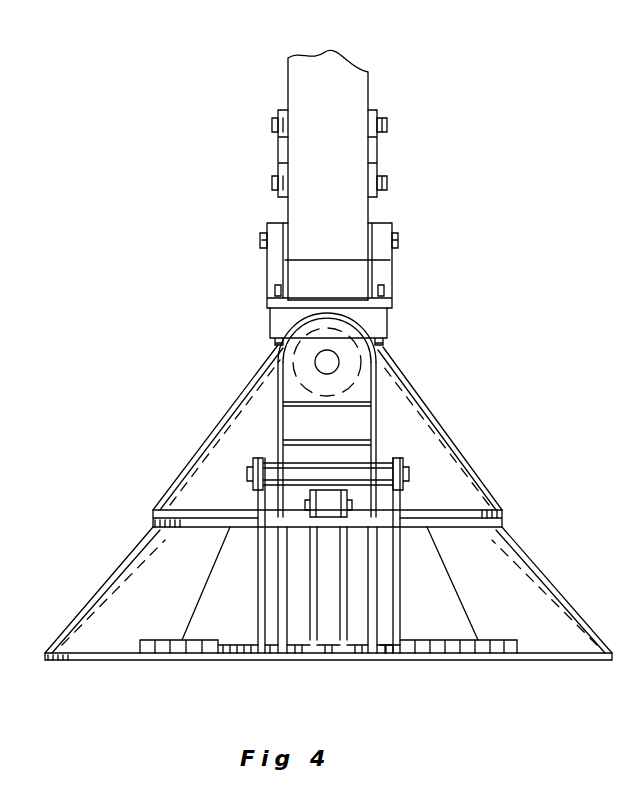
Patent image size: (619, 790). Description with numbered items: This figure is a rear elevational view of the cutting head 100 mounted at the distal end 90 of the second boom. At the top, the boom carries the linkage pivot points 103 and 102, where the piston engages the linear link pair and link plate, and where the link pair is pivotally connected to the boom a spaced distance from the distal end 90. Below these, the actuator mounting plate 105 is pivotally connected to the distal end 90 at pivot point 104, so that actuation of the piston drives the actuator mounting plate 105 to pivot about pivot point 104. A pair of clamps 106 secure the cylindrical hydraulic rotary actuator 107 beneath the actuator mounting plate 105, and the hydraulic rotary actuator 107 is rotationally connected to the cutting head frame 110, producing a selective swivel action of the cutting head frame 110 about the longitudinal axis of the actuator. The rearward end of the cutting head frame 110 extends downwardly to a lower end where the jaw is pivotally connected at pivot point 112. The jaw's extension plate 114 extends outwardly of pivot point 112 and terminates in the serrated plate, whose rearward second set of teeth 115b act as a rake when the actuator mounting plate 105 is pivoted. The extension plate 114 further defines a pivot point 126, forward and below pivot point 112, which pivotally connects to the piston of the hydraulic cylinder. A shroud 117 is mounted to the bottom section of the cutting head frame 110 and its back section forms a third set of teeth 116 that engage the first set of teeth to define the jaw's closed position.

The distal end 90 is at (330, 156).
The cutting head 100 is at (190, 388).
The pivot point 102 is at (272, 183).
The pivot point 103 is at (272, 124).
The pivot point 104 is at (260, 238).
The actuator mounting plate 105 is at (385, 272).
The clamps 106 is at (276, 325).
The hydraulic rotary actuator 107 is at (356, 371).
The cutting head frame 110 is at (442, 471).
The pivot point 112 is at (332, 472).
The extension plate 114 is at (257, 582).
The second set of teeth 115b is at (241, 655).
The third set of teeth 116 is at (490, 652).
The shroud 117 is at (490, 580).
The pivot point 126 is at (320, 497).